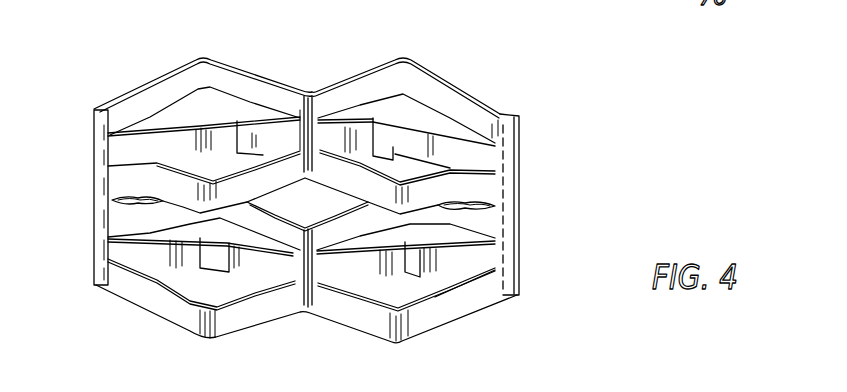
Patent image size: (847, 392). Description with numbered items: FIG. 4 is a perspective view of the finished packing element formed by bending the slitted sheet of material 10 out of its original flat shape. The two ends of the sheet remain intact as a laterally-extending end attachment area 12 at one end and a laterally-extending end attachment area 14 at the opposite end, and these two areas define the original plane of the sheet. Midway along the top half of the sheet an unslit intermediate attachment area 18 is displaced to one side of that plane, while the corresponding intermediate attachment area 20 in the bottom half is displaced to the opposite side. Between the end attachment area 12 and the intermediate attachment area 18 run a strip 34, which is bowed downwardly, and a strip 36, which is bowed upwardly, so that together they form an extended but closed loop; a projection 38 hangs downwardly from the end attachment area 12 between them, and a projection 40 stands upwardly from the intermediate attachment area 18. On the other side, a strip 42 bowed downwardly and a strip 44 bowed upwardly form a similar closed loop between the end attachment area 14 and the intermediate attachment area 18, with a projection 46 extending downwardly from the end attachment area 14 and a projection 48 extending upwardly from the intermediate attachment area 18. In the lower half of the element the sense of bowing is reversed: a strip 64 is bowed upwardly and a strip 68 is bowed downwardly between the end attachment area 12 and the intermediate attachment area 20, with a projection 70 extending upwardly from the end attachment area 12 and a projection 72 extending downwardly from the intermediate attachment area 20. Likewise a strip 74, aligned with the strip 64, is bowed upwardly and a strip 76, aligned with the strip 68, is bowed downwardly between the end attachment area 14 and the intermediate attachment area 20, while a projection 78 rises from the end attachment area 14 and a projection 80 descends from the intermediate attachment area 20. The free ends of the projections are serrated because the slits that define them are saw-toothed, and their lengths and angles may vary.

The sheet of material 10 is at (473, 42).
The end attachment area 12 is at (96, 110).
The end attachment area 14 is at (513, 183).
The intermediate attachment area 18 is at (305, 94).
The intermediate attachment area 20 is at (305, 297).
The strip 34 is at (147, 97).
The strip 36 is at (121, 180).
The projection 38 is at (123, 148).
The projection 40 is at (258, 137).
The strip 42 is at (474, 105).
The strip 44 is at (463, 189).
The projection 46 is at (496, 155).
The projection 48 is at (348, 143).
The strip 64 is at (140, 291).
The strip 68 is at (122, 215).
The projection 70 is at (122, 248).
The projection 72 is at (244, 257).
The strip 74 is at (461, 303).
The strip 76 is at (498, 229).
The projection 78 is at (476, 253).
The projection 80 is at (359, 263).